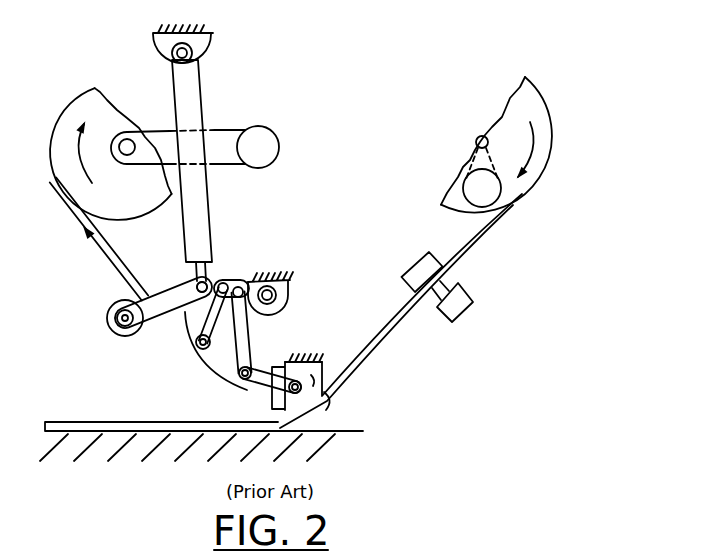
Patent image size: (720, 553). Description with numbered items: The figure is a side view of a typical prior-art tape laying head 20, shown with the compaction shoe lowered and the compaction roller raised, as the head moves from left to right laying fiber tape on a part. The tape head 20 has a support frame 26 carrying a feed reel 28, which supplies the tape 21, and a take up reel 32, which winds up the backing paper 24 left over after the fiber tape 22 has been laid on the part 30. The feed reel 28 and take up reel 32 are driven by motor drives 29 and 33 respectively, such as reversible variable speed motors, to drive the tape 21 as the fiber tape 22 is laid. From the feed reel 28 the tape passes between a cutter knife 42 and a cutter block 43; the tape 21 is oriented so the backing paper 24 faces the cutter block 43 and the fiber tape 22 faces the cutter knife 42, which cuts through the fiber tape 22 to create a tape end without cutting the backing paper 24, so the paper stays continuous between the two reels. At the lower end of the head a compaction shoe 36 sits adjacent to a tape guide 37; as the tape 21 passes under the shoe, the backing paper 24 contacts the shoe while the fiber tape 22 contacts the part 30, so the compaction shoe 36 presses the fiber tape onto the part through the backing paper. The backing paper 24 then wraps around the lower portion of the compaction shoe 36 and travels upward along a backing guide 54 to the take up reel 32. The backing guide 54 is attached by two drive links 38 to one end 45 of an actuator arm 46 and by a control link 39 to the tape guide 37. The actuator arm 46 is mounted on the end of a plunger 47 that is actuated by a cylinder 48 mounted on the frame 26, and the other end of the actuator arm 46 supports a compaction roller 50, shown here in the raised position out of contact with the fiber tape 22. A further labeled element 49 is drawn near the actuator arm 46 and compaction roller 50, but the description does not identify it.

The tape laying head 20 is at (380, 116).
The tape 21 is at (509, 217).
The fiber tape 22 is at (138, 420).
The backing paper 24 is at (83, 222).
The support frame 26 is at (200, 28).
The feed reel 28 is at (544, 113).
The motor drive 29 is at (467, 186).
The part 30 is at (318, 437).
The take up reel 32 is at (63, 183).
The motor drive 33 is at (262, 127).
The compaction shoe 36 is at (268, 360).
The tape guide 37 is at (331, 400).
The drive links 38 is at (198, 316).
The control link 39 is at (252, 392).
The cutter knife 42 is at (474, 299).
The cutter block 43 is at (426, 252).
The end of actuator arm 45 is at (279, 312).
The actuator arm 46 is at (161, 288).
The plunger 47 is at (206, 279).
The cylinder 48 is at (193, 80).
The rod 49 is at (135, 294).
The compaction roller 50 is at (106, 318).
The backing guide 54 is at (207, 358).